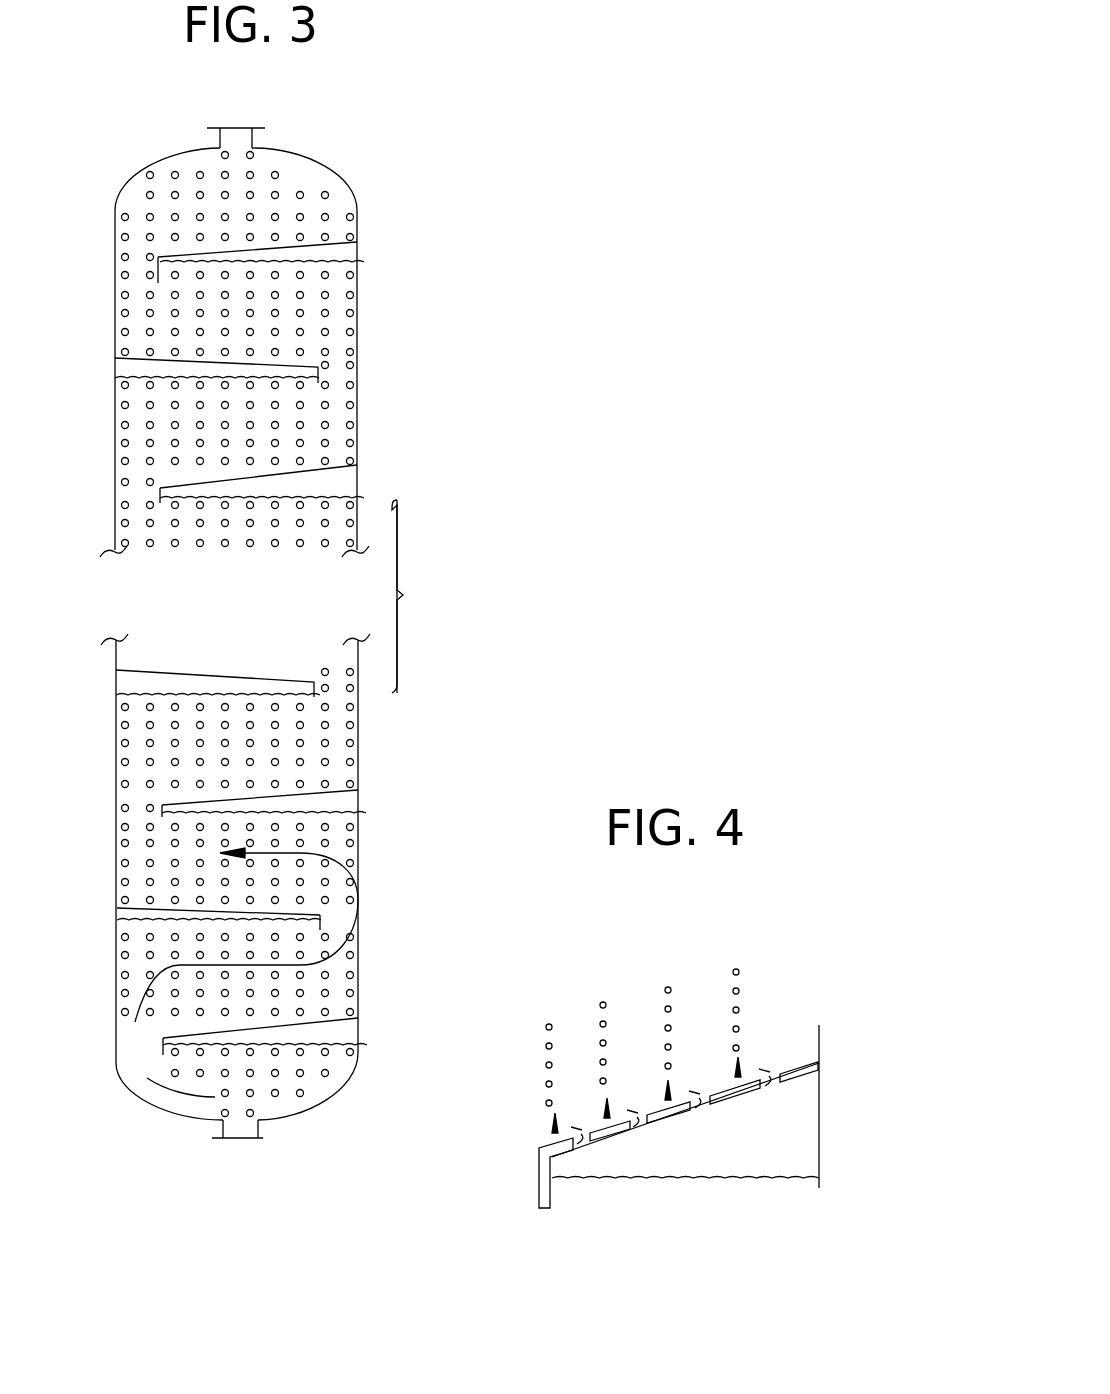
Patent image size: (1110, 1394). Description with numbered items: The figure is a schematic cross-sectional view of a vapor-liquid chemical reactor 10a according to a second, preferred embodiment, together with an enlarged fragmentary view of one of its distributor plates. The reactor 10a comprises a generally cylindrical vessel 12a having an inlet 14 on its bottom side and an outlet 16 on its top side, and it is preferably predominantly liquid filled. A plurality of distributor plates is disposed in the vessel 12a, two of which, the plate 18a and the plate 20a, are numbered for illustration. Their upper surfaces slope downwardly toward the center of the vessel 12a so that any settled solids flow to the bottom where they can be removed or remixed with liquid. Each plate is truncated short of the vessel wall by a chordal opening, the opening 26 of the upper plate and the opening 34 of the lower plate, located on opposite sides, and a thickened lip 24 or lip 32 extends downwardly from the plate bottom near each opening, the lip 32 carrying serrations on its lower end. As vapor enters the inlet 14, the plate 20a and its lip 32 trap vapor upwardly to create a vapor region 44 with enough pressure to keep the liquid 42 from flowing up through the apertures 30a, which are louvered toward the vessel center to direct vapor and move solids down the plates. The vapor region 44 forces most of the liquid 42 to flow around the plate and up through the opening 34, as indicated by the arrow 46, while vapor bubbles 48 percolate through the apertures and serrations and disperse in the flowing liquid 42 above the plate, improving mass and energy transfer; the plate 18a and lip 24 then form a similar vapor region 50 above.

In FIG. 3, the vapor-liquid chemical reactor 10a is at (448, 358).
In FIG. 3, the vessel 12a is at (358, 438).
In FIG. 4, the vessel 12a is at (819, 1048).
In FIG. 3, the inlet 14 is at (240, 1138).
In FIG. 3, the outlet 16 is at (232, 128).
In FIG. 3, the distributor plate 18a is at (165, 905).
In FIG. 3, the distributor plate 20a is at (335, 1016).
In FIG. 4, the distributor plate 20a is at (800, 1067).
In FIG. 3, the lip 24 is at (328, 928).
In FIG. 3, the chordal opening 26 is at (325, 910).
In FIG. 4, the apertures 30a is at (628, 1112).
In FIG. 3, the lip 32 is at (160, 1040).
In FIG. 4, the lip 32 is at (539, 1165).
In FIG. 3, the chordal opening 34 is at (118, 1073).
In FIG. 4, the liquid 42 is at (703, 1215).
In FIG. 3, the vapor region 44 is at (348, 1033).
In FIG. 4, the vapor region 44 is at (780, 1125).
In FIG. 3, the arrow 46 is at (335, 864).
In FIG. 3, the vapor bubbles 48 is at (175, 955).
In FIG. 4, the vapor bubbles 48 is at (606, 1003).
In FIG. 3, the vapor region 50 is at (115, 913).